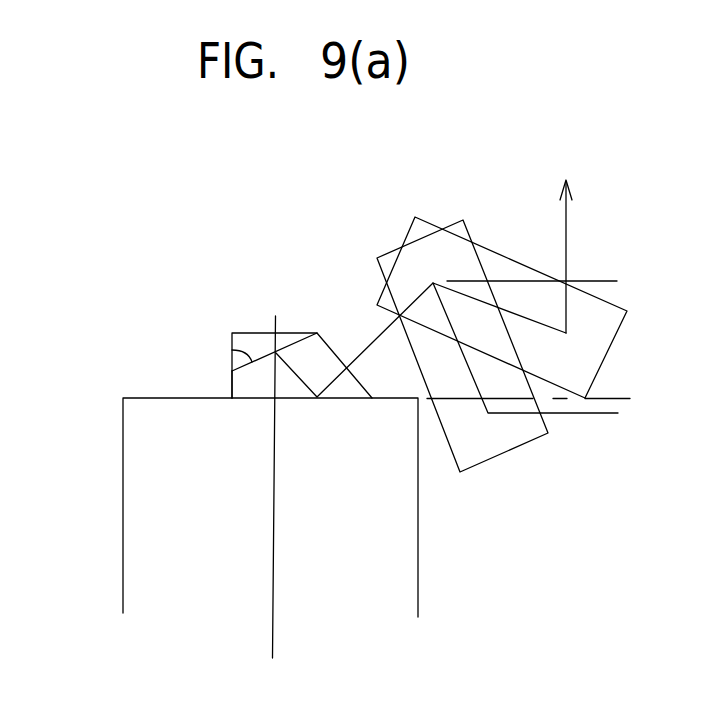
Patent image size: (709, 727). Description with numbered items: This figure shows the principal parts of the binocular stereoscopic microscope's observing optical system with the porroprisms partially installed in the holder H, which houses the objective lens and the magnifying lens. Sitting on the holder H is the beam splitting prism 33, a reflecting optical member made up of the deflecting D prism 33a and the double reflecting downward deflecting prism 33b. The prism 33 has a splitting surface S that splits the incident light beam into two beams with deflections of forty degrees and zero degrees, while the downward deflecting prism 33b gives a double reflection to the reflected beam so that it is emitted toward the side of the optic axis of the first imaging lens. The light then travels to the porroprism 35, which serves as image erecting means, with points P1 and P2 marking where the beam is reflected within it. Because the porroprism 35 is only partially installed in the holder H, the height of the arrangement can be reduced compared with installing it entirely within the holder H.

The beam splitting prism 33 is at (100, 325).
The D prism 33a is at (232, 359).
The double reflecting downward deflecting prism 33b is at (243, 380).
The splitting surface S is at (232, 350).
The holder H is at (419, 585).
The first reflection point P1 is at (433, 283).
The second reflection point P2 is at (566, 333).
The porroprism 35 is at (581, 402).